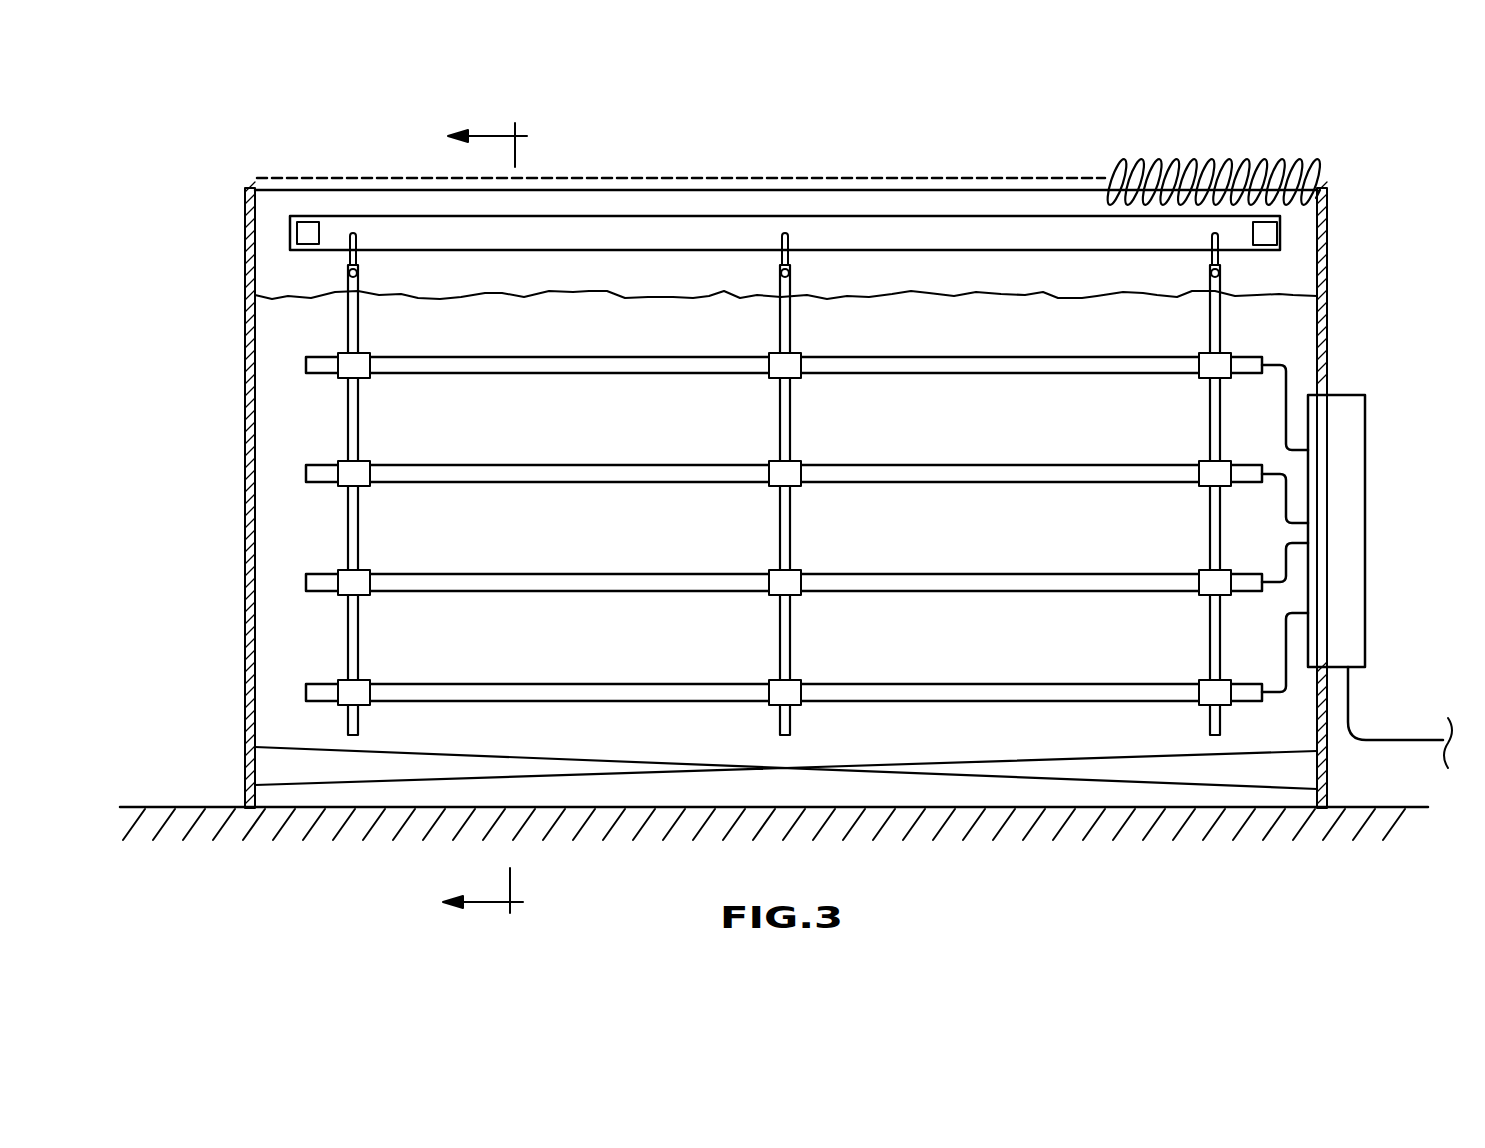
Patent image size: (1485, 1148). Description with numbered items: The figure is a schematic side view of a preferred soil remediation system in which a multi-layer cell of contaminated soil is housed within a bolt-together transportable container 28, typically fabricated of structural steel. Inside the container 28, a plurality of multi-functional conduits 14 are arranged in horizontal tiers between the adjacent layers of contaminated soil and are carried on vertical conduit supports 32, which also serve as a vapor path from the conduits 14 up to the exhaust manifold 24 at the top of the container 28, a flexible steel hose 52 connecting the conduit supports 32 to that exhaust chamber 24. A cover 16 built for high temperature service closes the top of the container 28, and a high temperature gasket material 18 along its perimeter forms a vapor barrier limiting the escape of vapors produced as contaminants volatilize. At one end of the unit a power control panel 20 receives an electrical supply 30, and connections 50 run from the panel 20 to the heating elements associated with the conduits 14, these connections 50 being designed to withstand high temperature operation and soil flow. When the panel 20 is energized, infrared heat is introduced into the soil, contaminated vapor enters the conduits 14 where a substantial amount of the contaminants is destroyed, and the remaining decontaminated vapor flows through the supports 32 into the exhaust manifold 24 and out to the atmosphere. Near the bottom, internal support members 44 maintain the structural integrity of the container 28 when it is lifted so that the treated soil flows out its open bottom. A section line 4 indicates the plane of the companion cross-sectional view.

The section line 4- 4 is at (497, 520).
The multi-functional conduits 14 is at (571, 375).
The cover 16 is at (1182, 158).
The high temperature gasket material 18 is at (855, 178).
The power control panel 20 is at (1365, 530).
The exhaust manifold 24 is at (645, 216).
The bolt-together transportable container 28 is at (245, 494).
The electrical supply 30 is at (1400, 735).
The conduit supports 32 is at (359, 421).
The internal support members 44 is at (533, 758).
The connections 50 is at (1286, 405).
The flexible steel hose 52 is at (358, 238).